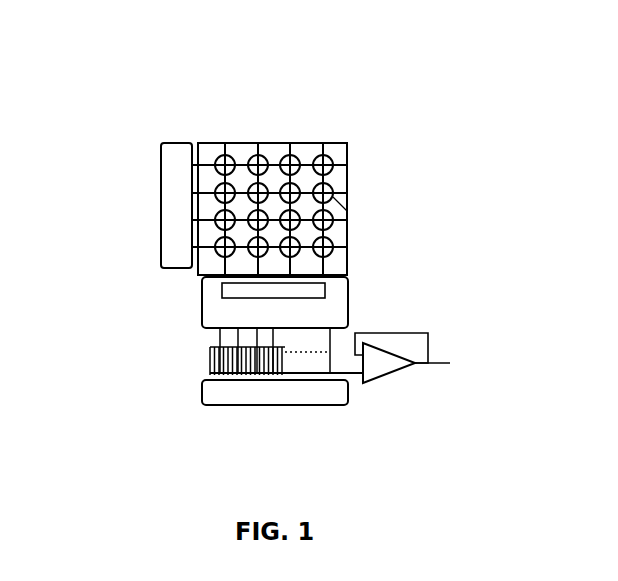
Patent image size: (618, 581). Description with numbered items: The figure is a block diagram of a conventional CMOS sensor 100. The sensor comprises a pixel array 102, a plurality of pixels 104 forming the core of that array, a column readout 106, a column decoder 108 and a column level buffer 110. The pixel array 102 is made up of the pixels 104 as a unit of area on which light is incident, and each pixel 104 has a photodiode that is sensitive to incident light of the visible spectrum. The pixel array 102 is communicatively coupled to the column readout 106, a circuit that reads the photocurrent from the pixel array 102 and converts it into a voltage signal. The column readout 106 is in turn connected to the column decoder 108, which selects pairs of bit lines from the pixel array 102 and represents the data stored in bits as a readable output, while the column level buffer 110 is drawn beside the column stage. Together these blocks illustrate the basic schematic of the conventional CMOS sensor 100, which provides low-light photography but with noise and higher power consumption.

The conventional CMOS sensor 100 is at (458, 102).
The pixel array 102 is at (370, 127).
The pixel 104 is at (133, 132).
The column readout 106 is at (222, 290).
The column decoder 108 is at (202, 388).
The column level buffer 110 is at (390, 370).